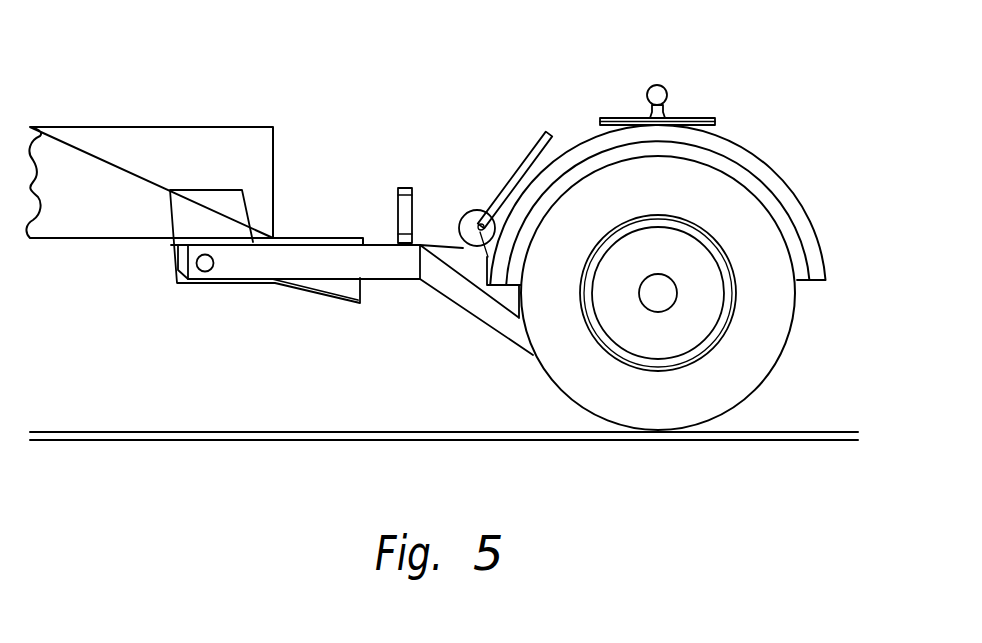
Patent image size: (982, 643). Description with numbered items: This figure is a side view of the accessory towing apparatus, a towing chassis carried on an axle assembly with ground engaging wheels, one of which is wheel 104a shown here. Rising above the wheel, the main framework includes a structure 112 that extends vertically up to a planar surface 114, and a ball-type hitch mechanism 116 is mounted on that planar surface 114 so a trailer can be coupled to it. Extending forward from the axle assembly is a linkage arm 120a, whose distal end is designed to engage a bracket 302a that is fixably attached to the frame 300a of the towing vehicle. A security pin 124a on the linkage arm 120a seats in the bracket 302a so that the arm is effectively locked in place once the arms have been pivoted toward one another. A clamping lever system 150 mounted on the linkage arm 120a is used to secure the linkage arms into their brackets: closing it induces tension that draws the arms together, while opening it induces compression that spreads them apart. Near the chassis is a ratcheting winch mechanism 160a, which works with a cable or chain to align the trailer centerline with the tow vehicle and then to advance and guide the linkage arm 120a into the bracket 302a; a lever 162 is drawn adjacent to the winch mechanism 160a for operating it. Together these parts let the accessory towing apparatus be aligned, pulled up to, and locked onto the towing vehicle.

The frame 300a is at (137, 184).
The bracket 302a is at (222, 285).
The linkage arm 120a is at (312, 265).
The security pin 124a is at (201, 272).
The clamping lever system 150 is at (397, 207).
The ratcheting winch mechanism 160a is at (478, 210).
The lever 162 is at (534, 150).
The structure 112 is at (723, 131).
The planar surface 114 is at (697, 118).
The hitch mechanism 116 is at (655, 85).
The wheel 104a is at (790, 330).